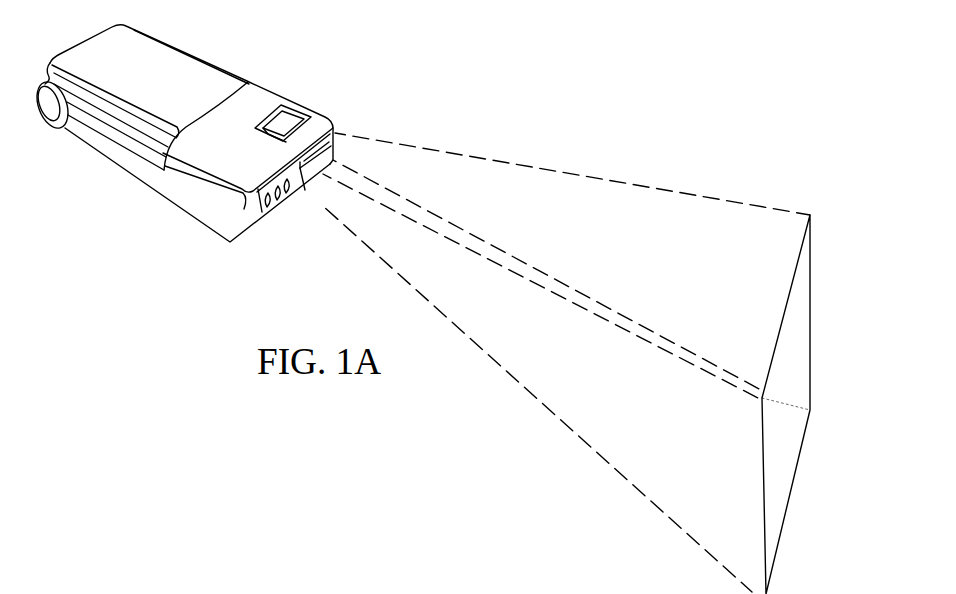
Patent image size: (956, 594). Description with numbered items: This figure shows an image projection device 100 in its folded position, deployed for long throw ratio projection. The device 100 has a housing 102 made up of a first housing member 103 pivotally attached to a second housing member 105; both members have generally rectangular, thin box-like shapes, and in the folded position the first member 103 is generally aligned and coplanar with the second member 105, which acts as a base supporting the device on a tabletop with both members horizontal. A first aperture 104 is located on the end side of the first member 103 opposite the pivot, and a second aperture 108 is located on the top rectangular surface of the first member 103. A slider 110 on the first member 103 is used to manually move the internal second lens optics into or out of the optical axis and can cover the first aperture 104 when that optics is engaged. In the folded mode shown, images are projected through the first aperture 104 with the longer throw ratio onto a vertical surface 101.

The device 100 is at (223, 146).
The vertical surface 101 is at (792, 540).
The housing 102 is at (114, 179).
The first housing member 103 is at (197, 70).
The first aperture 104 is at (322, 143).
The second housing member 105 is at (212, 229).
The second aperture 108 is at (291, 119).
The slider 110 is at (278, 208).